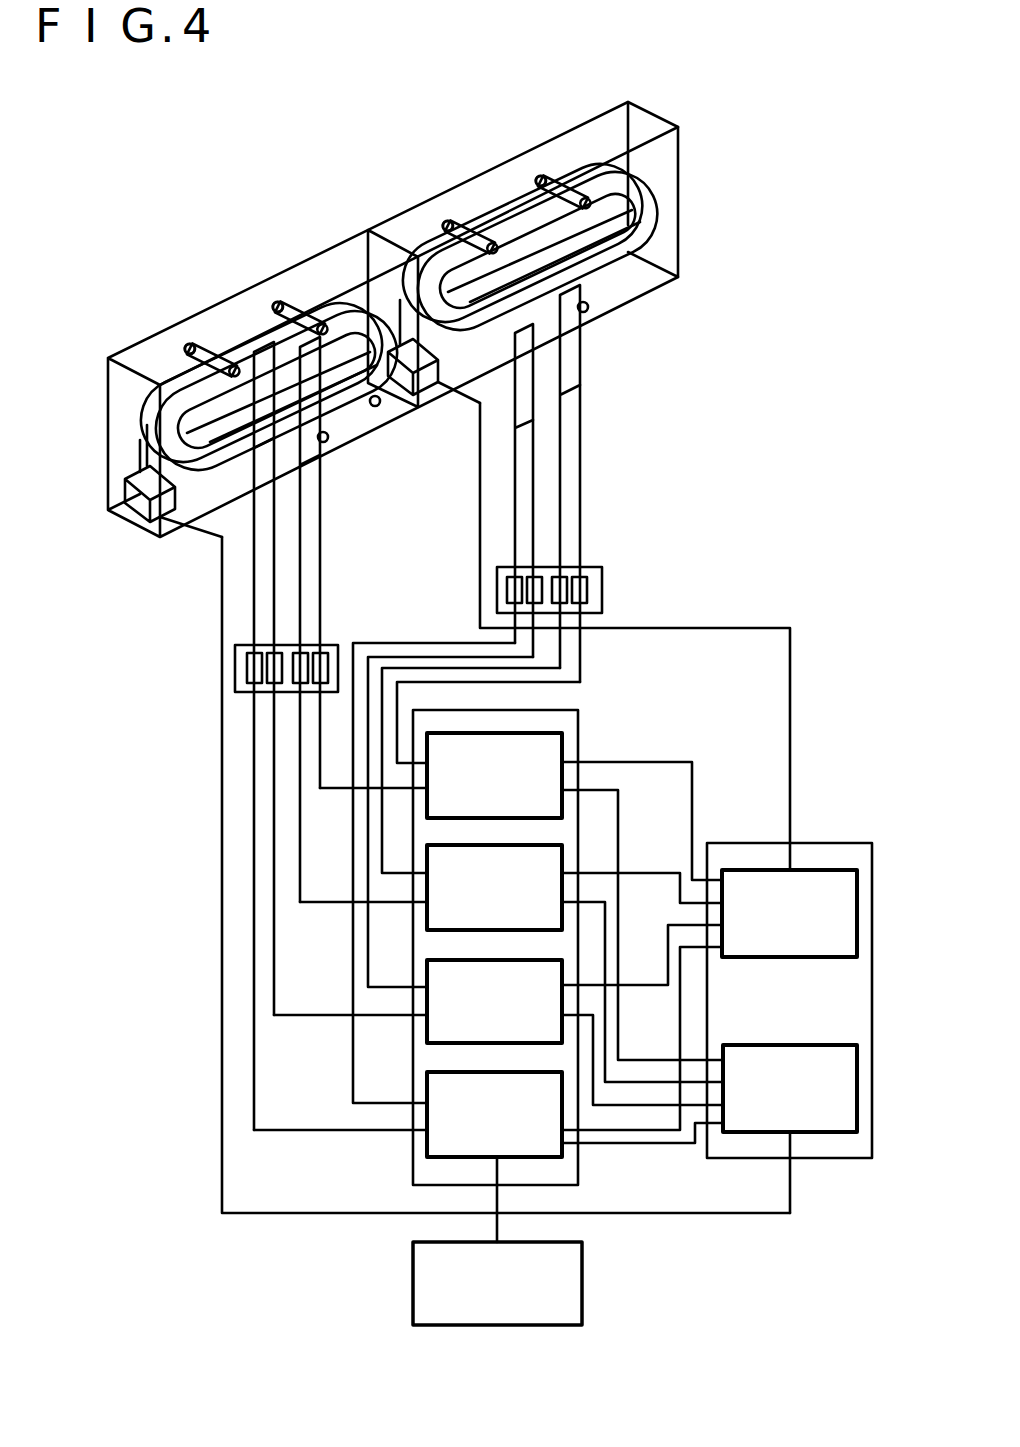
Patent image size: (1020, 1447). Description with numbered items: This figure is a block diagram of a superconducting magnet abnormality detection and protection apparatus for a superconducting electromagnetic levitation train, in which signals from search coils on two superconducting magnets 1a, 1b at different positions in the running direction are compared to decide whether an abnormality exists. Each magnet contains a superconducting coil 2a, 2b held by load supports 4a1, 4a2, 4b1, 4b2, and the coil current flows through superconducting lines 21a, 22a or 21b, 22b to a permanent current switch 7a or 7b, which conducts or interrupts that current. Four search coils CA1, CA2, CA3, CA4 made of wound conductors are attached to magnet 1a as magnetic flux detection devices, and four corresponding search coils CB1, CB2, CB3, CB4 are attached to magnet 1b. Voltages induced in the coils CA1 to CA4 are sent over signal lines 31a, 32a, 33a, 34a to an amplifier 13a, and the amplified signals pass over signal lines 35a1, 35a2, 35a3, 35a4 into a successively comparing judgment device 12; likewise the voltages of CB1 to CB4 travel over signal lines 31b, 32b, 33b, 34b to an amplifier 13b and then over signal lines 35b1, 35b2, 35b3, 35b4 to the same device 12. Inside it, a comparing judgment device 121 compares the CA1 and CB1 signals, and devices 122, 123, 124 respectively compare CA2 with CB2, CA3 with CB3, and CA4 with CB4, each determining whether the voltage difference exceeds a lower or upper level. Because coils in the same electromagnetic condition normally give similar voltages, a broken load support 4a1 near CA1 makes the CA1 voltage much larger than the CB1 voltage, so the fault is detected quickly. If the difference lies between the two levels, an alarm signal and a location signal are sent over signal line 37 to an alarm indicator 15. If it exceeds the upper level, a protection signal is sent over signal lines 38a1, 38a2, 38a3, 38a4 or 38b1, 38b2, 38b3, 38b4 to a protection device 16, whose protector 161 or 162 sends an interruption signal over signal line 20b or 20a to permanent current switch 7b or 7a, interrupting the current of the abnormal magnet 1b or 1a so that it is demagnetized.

The superconducting magnet 1a is at (253, 303).
The superconducting magnet 1b is at (508, 185).
The superconducting coil 2a is at (108, 373).
The superconducting coil 2b is at (368, 232).
The load support 4a1 is at (202, 350).
The load support 4a2 is at (290, 295).
The load support 4b1 is at (460, 197).
The load support 4b2 is at (548, 167).
The search coil CA1 is at (145, 366).
The search coil CA2 is at (320, 267).
The search coil CA3 is at (128, 428).
The search coil CA4 is at (328, 436).
The search coil CB1 is at (438, 218).
The search coil CB2 is at (641, 209).
The search coil CB3 is at (434, 384).
The search coil CB4 is at (627, 278).
The permanent current switch 7a is at (124, 523).
The permanent current switch 7b is at (372, 466).
The superconducting line 21a is at (133, 468).
The superconducting line 21b is at (403, 423).
The superconducting line 22a is at (122, 497).
The superconducting line 22b is at (390, 440).
The signal line 31a is at (255, 620).
The signal line 32a is at (302, 569).
The signal line 33a is at (277, 595).
The signal line 34a is at (323, 522).
The signal line 31b is at (524, 496).
The signal line 32b is at (567, 400).
The signal line 33b is at (542, 449).
The signal line 34b is at (585, 354).
The amplifier 13a is at (235, 666).
The amplifier 13b is at (602, 572).
The signal line 20a is at (222, 837).
The signal line 20b is at (753, 628).
The signal line 35a1 is at (258, 1132).
The signal line 35a2 is at (305, 905).
The signal line 35a3 is at (283, 1020).
The signal line 35a4 is at (320, 730).
The signal line 35b1 is at (385, 1104).
The signal line 35b2 is at (380, 886).
The signal line 35b3 is at (402, 987).
The signal line 35b4 is at (406, 760).
The successively comparing judgment device 12 is at (413, 1165).
The comparing judgment device 121 is at (475, 1070).
The comparing judgment device 122 is at (475, 842).
The comparing judgment device 123 is at (475, 957).
The comparing judgment device 124 is at (542, 733).
The signal line 38a1 is at (667, 1145).
The signal line 38a2 is at (595, 892).
The signal line 38a3 is at (610, 1105).
The signal line 38a4 is at (630, 801).
The signal line 38b1 is at (680, 1135).
The signal line 38b2 is at (702, 874).
The signal line 38b3 is at (670, 972).
The signal line 38b4 is at (670, 762).
The protection device 16 is at (838, 1158).
The protector 161 is at (828, 868).
The protector 162 is at (828, 1044).
The signal line 37 is at (497, 1201).
The alarm indicator 15 is at (583, 1258).